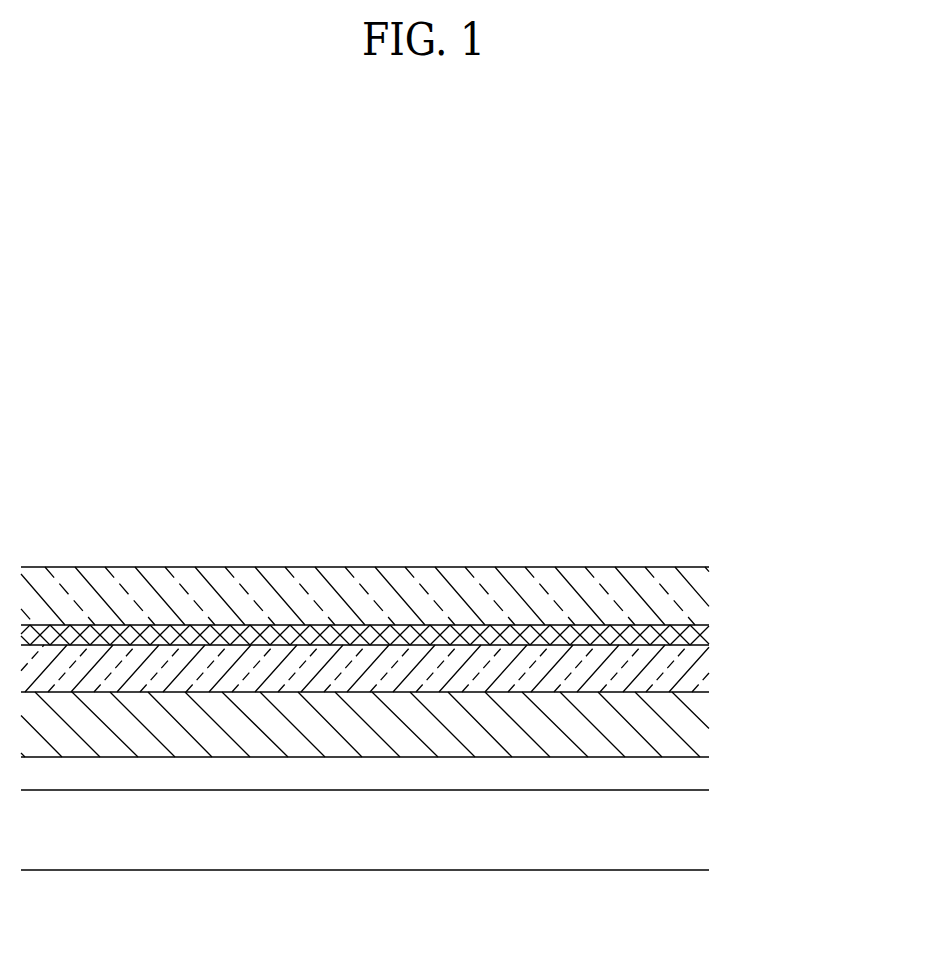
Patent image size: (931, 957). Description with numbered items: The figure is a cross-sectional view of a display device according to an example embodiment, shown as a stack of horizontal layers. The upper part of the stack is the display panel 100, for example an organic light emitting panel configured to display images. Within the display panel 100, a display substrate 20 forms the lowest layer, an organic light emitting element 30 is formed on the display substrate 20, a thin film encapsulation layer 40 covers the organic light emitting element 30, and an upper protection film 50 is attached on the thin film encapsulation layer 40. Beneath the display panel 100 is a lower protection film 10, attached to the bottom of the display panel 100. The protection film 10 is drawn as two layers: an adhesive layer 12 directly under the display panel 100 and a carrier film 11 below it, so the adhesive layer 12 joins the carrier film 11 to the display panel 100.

The display panel 100 is at (423, 662).
The upper protection film 50 is at (705, 594).
The thin film encapsulation layer 40 is at (707, 632).
The organic light emitting element 30 is at (707, 671).
The display substrate 20 is at (391, 724).
The protection film 10 is at (417, 807).
The adhesive layer 12 is at (705, 775).
The carrier film 11 is at (391, 848).